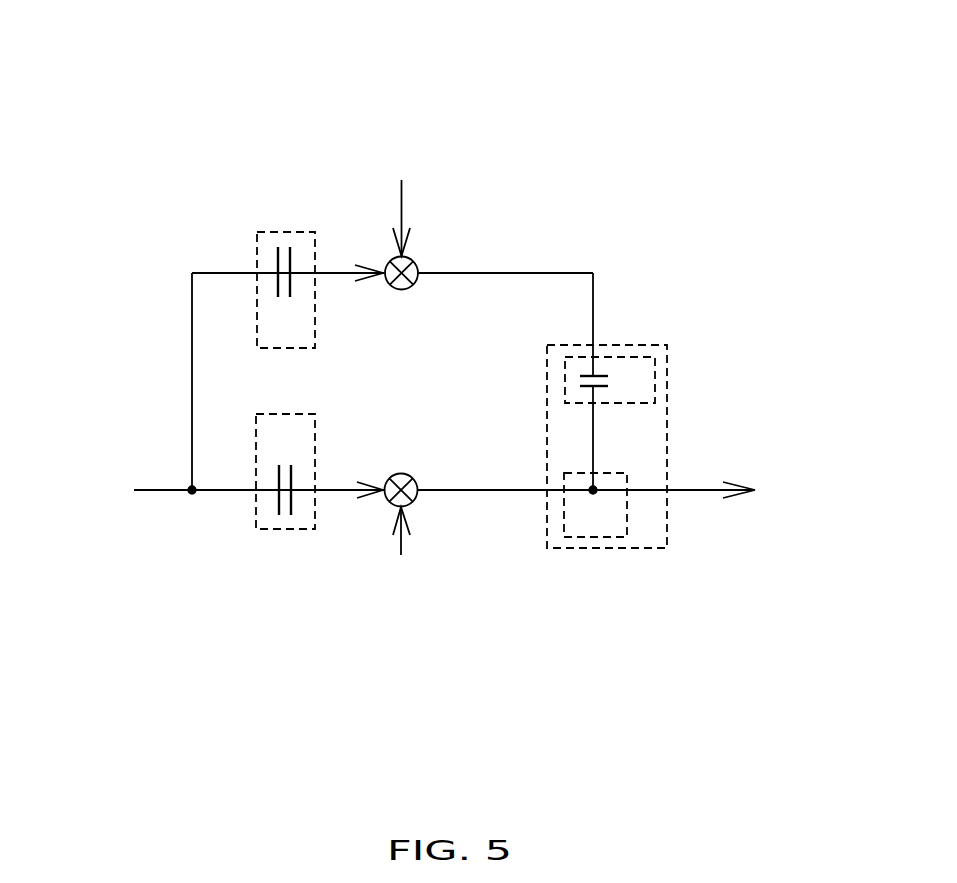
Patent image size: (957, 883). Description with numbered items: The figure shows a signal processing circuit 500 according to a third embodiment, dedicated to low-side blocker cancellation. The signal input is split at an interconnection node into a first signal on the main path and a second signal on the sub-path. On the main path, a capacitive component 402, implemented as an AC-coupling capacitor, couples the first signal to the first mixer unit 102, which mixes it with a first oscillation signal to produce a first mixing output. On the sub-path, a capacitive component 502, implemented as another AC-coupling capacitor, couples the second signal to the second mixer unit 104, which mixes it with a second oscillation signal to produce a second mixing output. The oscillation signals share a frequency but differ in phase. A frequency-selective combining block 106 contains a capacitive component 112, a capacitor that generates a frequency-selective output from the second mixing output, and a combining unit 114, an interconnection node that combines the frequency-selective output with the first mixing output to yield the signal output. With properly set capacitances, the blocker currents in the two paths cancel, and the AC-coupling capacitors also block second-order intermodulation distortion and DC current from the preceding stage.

The signal processing circuit 500 is at (665, 103).
The capacitive component 502 is at (276, 230).
The capacitive component 402 is at (277, 533).
The first mixer unit 102 is at (397, 475).
The second mixer unit 104 is at (410, 290).
The frequency-selective combining block 106 is at (642, 345).
The capacitive component 112 is at (656, 382).
The combining unit 114 is at (607, 540).